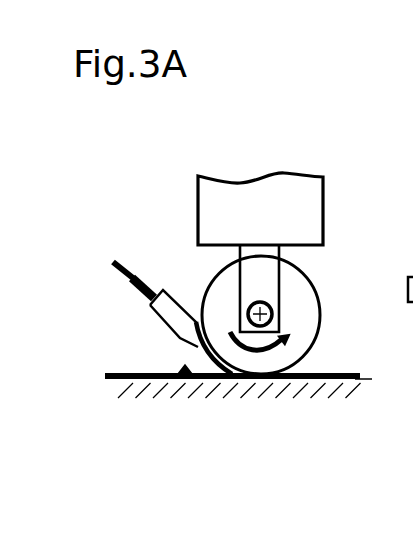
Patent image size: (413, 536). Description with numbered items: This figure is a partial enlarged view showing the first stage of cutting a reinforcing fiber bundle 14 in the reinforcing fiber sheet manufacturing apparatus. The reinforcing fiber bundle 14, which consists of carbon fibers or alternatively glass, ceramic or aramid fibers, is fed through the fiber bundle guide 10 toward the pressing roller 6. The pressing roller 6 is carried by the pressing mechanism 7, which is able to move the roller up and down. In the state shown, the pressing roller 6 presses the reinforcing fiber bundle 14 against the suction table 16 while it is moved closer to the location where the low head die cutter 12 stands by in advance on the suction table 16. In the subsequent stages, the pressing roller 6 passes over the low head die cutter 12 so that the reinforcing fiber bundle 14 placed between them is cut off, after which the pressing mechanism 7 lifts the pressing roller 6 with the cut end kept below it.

The pressing mechanism 7 is at (315, 218).
The pressing roller 6 is at (315, 297).
The fiber bundle guide 10 is at (160, 315).
The reinforcing fiber bundle 14 is at (152, 283).
The low head die cutter 12 is at (182, 380).
The suction table 16 is at (313, 390).